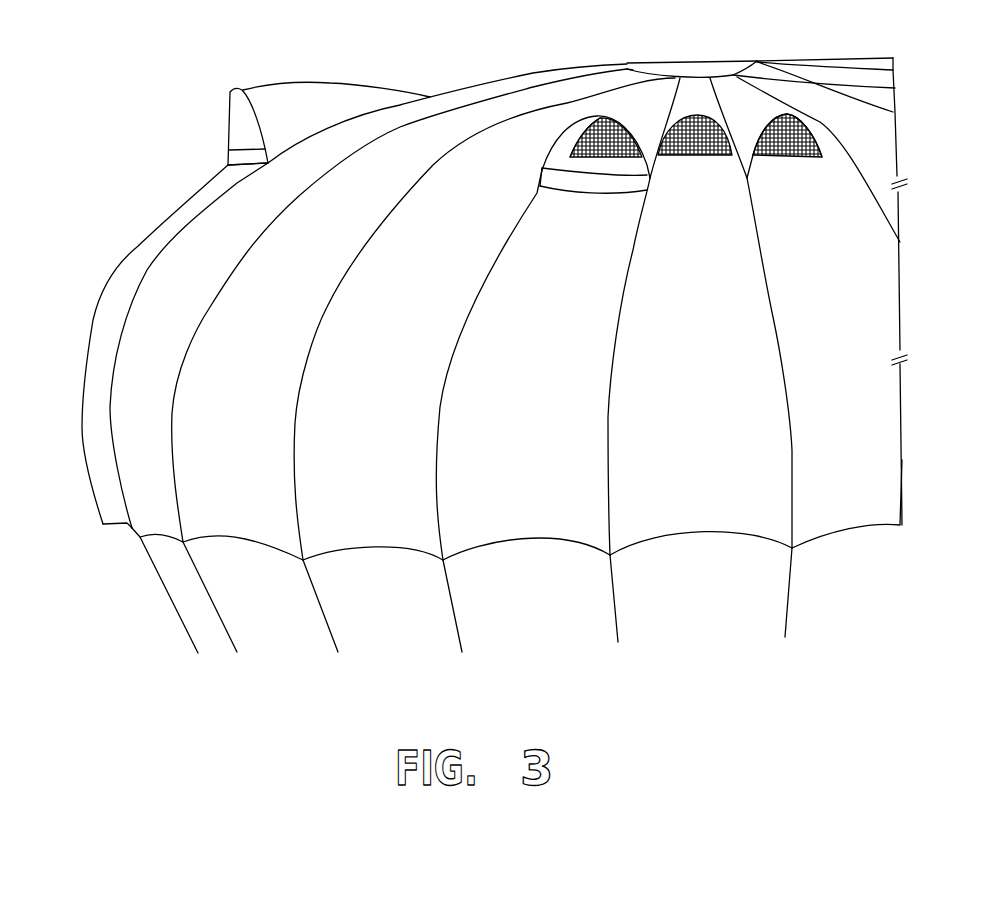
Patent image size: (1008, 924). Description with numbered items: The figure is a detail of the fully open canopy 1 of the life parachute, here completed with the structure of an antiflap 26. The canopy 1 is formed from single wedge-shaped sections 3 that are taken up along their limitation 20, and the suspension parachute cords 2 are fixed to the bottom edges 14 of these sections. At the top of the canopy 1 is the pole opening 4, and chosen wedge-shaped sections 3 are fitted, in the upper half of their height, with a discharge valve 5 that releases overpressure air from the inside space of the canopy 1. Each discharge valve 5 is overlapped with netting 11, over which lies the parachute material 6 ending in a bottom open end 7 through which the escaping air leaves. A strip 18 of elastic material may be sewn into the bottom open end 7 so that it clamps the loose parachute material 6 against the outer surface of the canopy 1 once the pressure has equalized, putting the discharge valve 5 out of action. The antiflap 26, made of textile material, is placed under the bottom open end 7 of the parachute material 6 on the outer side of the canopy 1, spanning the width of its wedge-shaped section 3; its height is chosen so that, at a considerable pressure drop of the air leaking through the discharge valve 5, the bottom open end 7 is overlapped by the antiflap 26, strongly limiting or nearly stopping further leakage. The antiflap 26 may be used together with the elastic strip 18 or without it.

The canopy 1 is at (470, 353).
The suspension parachute cords 2 is at (223, 628).
The wedge-shaped section 3 is at (97, 377).
The pole opening 4 is at (670, 70).
The discharge valve 5 is at (686, 189).
The parachute material 6 is at (343, 100).
The bottom open end 7 is at (243, 108).
The netting 11 is at (600, 157).
The bottom edges 14 is at (243, 540).
The elastic strip 18 is at (228, 142).
The limitation 20 is at (171, 415).
The antiflap 26 is at (248, 157).